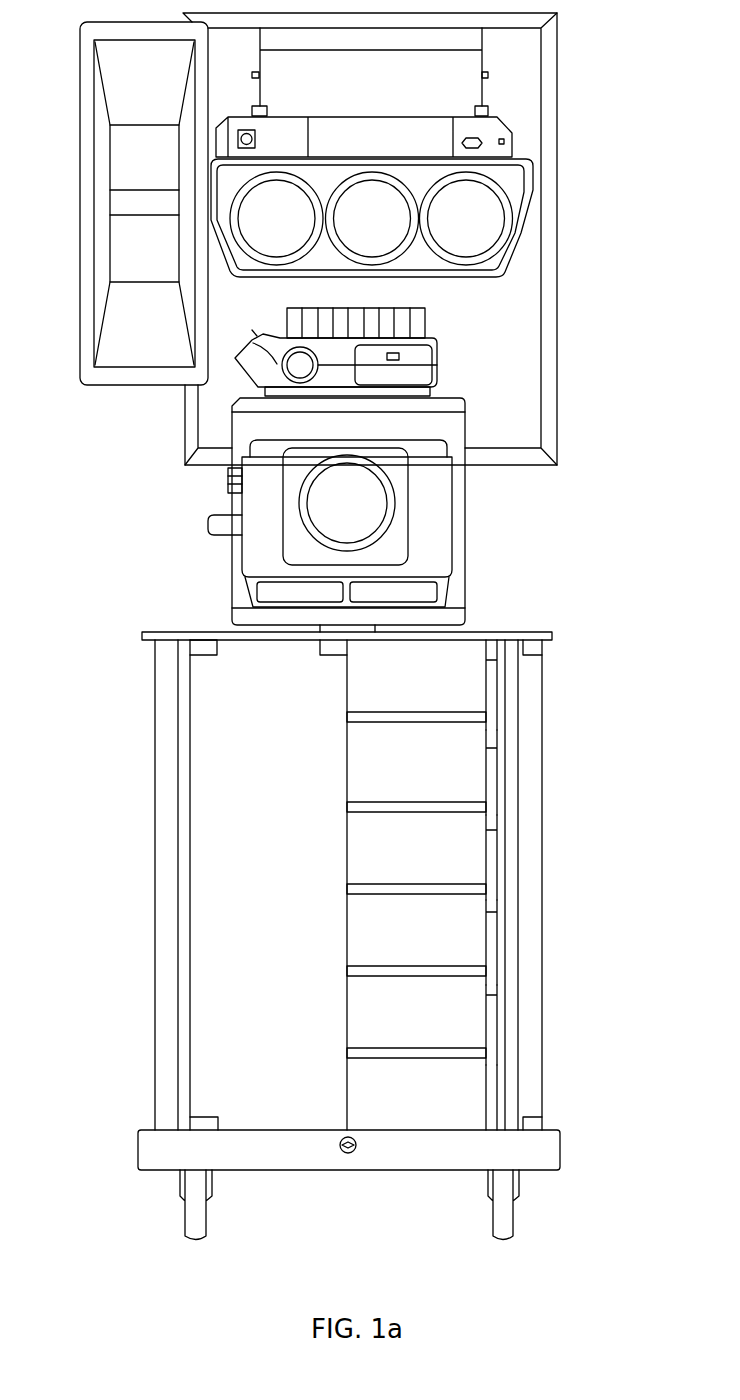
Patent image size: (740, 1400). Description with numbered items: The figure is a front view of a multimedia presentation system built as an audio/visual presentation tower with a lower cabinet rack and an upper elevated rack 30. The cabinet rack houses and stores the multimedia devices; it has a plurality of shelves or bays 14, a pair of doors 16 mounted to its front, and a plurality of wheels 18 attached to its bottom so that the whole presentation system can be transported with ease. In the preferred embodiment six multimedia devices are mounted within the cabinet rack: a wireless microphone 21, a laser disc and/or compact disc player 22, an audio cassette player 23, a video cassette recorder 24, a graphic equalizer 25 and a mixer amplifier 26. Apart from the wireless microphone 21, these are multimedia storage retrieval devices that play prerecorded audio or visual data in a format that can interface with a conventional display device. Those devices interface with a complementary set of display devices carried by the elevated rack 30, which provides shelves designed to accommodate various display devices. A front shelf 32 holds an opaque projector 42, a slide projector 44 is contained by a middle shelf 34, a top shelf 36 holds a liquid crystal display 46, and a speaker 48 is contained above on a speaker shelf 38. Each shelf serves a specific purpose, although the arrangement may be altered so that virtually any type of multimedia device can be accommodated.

The shelves or bays 14 is at (370, 710).
The doors 16 is at (225, 885).
The wheels 18 is at (193, 1233).
The wireless microphone 21 is at (473, 693).
The laser disc and/or compact disc player 22 is at (473, 765).
The audio cassette player 23 is at (473, 863).
The video cassette recorder 24 is at (473, 935).
The graphic equalizer 25 is at (473, 1028).
The mixer amplifier 26 is at (473, 1098).
The elevated rack 30 is at (548, 323).
The front shelf 32 is at (450, 620).
The middle shelf 34 is at (443, 403).
The top shelf 36 is at (477, 127).
The speaker shelf 38 is at (112, 373).
The opaque projector 42 is at (440, 525).
The slide projector 44 is at (415, 352).
The liquid crystal display 46 is at (508, 212).
The speaker 48 is at (130, 142).